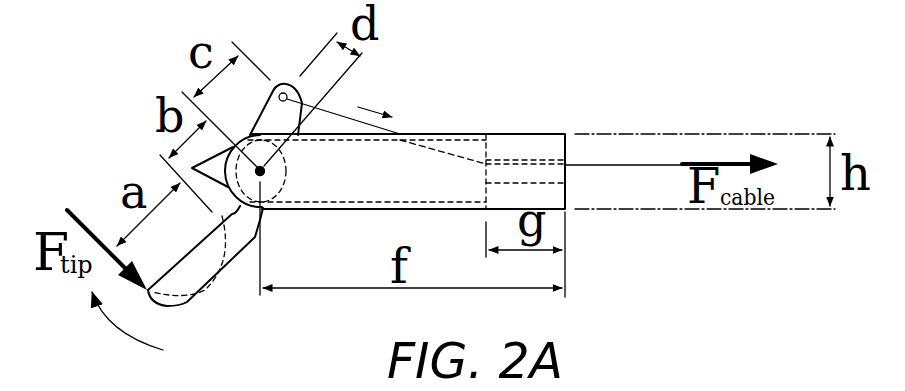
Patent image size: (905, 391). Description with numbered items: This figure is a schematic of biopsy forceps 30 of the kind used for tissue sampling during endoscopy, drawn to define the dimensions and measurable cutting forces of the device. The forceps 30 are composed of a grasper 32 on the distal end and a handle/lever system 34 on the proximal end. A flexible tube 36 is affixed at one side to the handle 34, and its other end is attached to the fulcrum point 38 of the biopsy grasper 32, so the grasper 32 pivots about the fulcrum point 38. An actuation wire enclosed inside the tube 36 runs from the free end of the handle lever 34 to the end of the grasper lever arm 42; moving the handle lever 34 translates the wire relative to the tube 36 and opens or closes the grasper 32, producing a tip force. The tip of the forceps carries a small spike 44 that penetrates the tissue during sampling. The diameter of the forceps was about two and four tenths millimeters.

The forceps 30 is at (580, 97).
The grasper 32 is at (210, 277).
The handle/lever system 34 is at (558, 172).
The flexible tube 36 is at (497, 133).
The fulcrum point 38 is at (262, 175).
The grasper lever arm 42 is at (282, 90).
The spike 44 is at (215, 172).